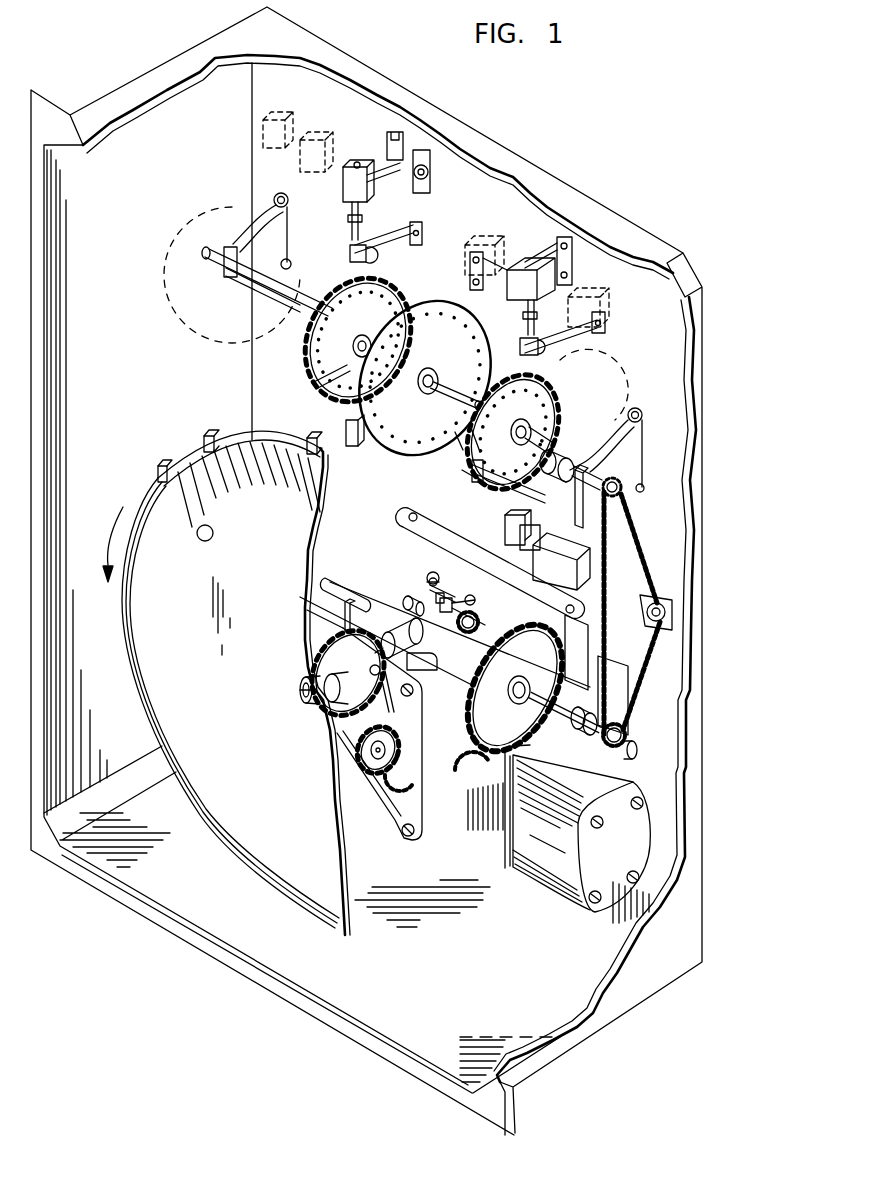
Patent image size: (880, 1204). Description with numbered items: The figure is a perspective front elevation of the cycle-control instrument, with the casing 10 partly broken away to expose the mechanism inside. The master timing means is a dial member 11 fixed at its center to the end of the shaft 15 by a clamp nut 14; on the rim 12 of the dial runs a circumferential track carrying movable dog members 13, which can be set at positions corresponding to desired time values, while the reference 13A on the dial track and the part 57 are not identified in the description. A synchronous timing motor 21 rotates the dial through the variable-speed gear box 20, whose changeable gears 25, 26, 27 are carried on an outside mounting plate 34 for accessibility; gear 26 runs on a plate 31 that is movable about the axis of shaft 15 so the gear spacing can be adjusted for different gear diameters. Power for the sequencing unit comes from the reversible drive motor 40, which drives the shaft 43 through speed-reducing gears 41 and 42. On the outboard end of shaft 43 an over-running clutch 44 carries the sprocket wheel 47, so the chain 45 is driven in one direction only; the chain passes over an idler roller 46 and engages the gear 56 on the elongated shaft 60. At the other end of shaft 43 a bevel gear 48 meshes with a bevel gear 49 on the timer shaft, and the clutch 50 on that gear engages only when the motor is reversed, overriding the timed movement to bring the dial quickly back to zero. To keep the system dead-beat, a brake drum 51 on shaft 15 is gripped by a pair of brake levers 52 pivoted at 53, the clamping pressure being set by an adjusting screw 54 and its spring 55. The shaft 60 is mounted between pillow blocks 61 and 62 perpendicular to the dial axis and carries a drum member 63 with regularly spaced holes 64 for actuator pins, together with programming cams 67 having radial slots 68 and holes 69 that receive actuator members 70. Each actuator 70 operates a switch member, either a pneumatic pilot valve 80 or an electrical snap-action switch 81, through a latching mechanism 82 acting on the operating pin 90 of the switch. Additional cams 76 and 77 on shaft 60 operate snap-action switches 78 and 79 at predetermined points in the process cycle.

The casing 10 is at (676, 338).
The dial member 11 is at (343, 863).
The rim 12 is at (273, 885).
The dog member 13 is at (207, 437).
The clip 13A is at (158, 466).
The clamp nut 14 is at (300, 692).
The shaft 15 is at (477, 600).
The gear box 20 is at (335, 570).
The timing motor 21 is at (353, 770).
The changeable gear member 25 is at (393, 788).
The changeable gear member 26 is at (402, 743).
The changeable gear member 27 is at (350, 612).
The plate 31 is at (388, 700).
The outside mounting plate 34 is at (393, 813).
The drive motor 40 is at (548, 851).
The speed-reducing gear 41 is at (483, 778).
The speed-reducing gear 42 is at (533, 623).
The drive shaft 43 is at (543, 685).
The clutch member 44 is at (630, 737).
The chain 45 is at (643, 680).
The idler roller 46 is at (657, 620).
The sprocket wheel 47 is at (622, 713).
The bevel gear 48 is at (470, 622).
The bevel gear 49 is at (408, 624).
The clutch 50 is at (427, 647).
The brake drum 51 is at (440, 607).
The brake levers 52 is at (428, 584).
The pivot 53 is at (404, 602).
The adjusting screw 54 is at (440, 575).
The spring 55 is at (443, 593).
The gear 56 is at (632, 497).
The bracket 57 is at (342, 432).
The elongated shaft 60 is at (273, 287).
The pillow block 61 is at (283, 227).
The pillow block 62 is at (638, 463).
The drum member 63 is at (402, 443).
The holes 64 is at (387, 437).
The programming cam 67 is at (547, 387).
The slots 68 is at (470, 447).
The holes 69 is at (515, 428).
The actuator member 70 is at (468, 470).
The cam 76 is at (547, 467).
The cam 77 is at (573, 503).
The snap-action switch 78 is at (540, 513).
The snap-action switch 79 is at (560, 563).
The switch member 80 is at (353, 167).
The switch member 81 is at (530, 263).
The latching mechanism 82 is at (337, 250).
The operating pin 90 is at (360, 233).